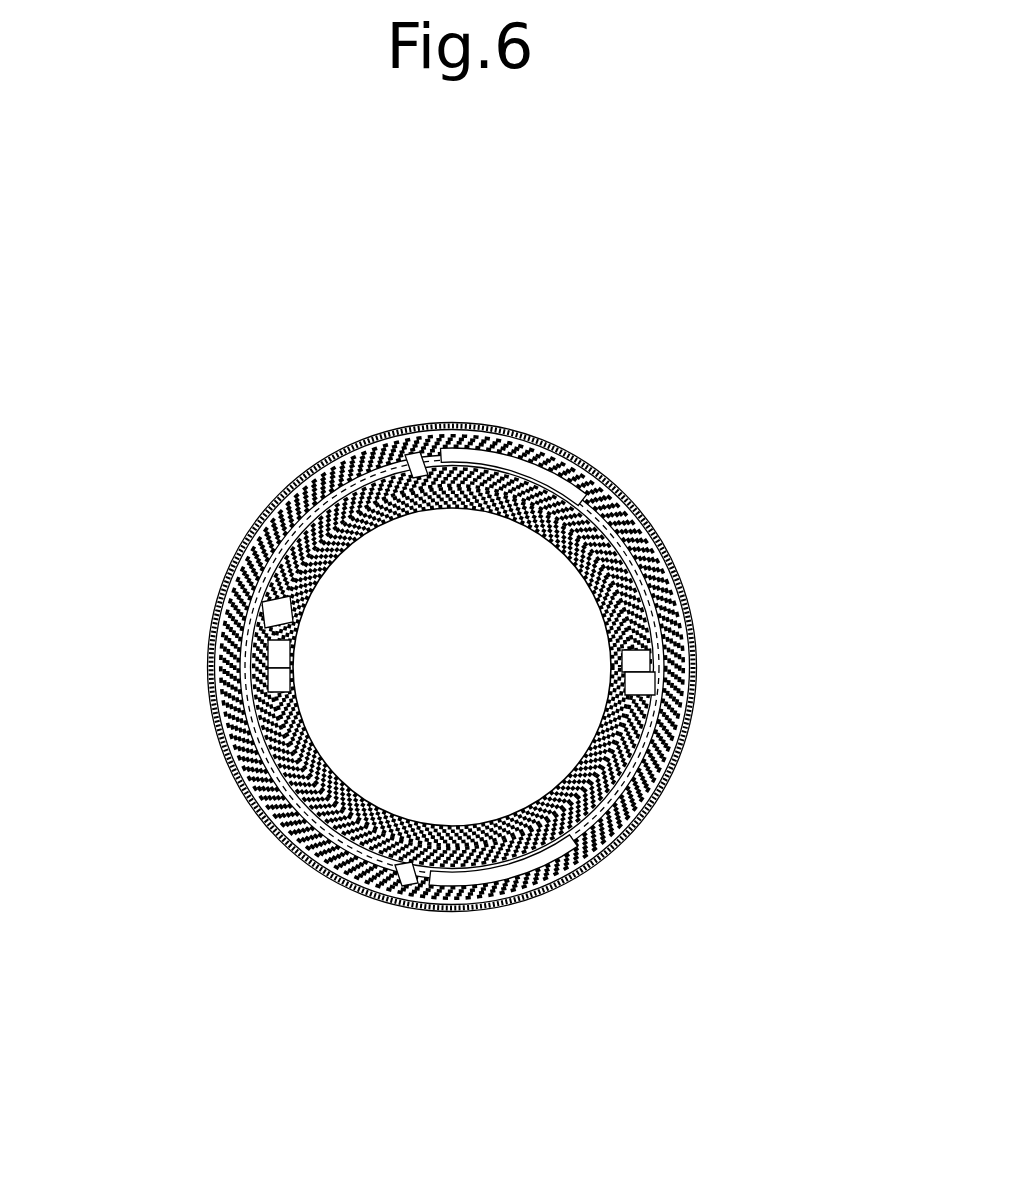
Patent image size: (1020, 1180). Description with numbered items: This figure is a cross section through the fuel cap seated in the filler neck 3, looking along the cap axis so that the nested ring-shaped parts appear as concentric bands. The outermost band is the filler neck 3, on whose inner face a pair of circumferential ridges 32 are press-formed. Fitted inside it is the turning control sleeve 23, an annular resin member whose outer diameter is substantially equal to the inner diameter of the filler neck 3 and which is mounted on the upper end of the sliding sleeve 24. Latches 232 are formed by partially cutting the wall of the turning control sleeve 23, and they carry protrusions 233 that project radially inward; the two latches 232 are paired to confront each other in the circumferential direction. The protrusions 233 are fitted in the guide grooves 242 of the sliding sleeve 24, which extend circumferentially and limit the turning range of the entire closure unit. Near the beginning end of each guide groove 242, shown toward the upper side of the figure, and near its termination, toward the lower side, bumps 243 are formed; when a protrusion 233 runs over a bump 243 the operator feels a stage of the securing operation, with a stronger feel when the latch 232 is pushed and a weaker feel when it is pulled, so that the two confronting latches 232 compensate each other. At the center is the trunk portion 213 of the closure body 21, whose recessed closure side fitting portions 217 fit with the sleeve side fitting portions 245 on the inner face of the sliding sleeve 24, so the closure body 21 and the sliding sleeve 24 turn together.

The filler neck 3 is at (687, 542).
The closure body 21 is at (615, 505).
The turning control sleeve 23 is at (253, 807).
The sliding sleeve 24 is at (650, 598).
The ridges 32 is at (242, 547).
The trunk portion 213 is at (270, 612).
The closure side fitting portions 217 is at (280, 667).
The latches 232 is at (452, 442).
The protrusions 233 is at (407, 457).
The guide grooves 242 is at (287, 493).
The bumps 243 is at (342, 455).
The sleeve side fitting portions 245 is at (280, 657).